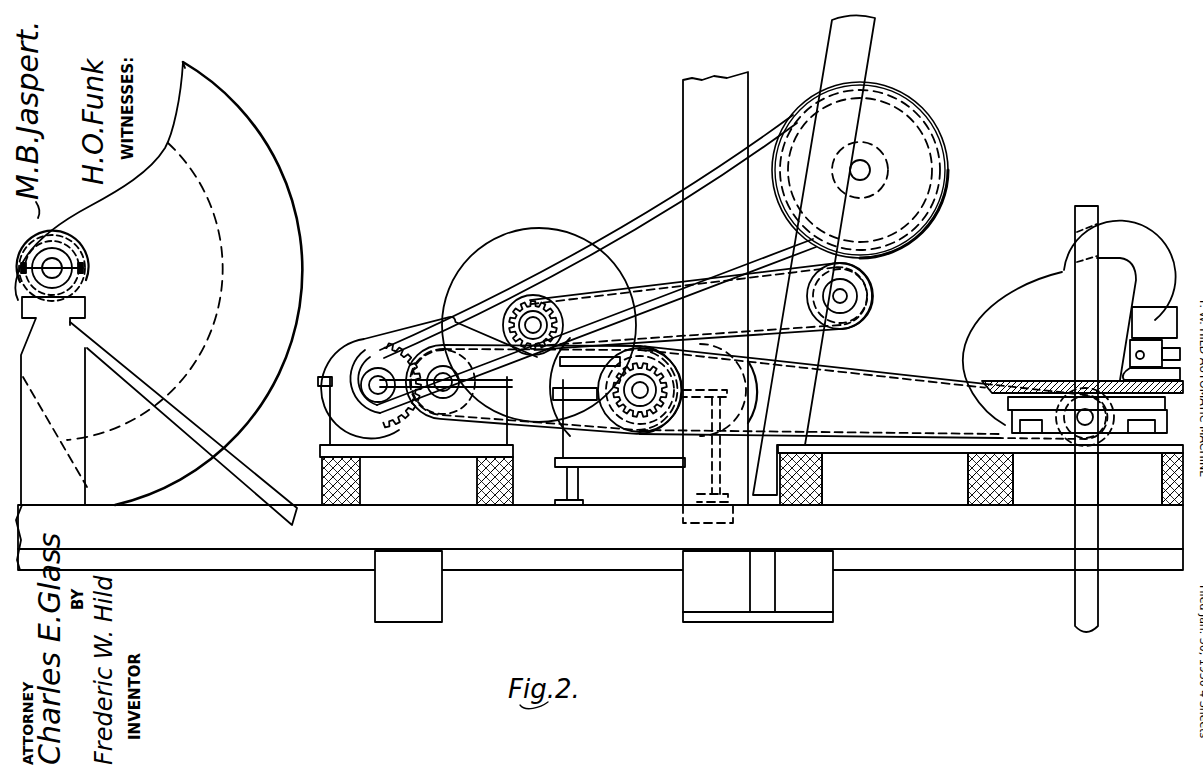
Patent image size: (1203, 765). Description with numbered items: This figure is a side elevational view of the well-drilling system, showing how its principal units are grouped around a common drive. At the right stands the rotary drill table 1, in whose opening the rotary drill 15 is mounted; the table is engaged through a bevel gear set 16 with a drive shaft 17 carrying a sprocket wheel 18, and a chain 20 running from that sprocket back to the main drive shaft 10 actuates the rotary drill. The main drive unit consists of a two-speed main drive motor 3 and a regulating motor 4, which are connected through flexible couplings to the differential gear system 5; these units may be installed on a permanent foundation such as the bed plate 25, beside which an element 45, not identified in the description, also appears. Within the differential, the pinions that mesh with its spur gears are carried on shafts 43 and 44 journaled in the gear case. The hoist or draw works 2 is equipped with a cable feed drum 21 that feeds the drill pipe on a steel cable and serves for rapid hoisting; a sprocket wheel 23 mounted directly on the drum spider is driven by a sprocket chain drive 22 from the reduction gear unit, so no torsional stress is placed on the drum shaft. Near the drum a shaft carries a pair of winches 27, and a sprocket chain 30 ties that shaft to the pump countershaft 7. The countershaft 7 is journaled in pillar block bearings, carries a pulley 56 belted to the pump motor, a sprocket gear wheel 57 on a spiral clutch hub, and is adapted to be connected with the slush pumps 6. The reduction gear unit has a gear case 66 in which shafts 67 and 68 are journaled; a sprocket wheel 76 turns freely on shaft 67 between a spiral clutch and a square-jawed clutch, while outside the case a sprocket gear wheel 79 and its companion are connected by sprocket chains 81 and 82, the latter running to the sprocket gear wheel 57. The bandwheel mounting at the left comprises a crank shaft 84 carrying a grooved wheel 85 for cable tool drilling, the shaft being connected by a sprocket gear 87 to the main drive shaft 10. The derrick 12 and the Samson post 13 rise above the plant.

The rotary drill table 1 is at (1057, 382).
The hoist or draw works 2 is at (946, 182).
The main drive motor 3 is at (762, 398).
The regulating motor 4 is at (562, 428).
The differential gear system 5 is at (642, 450).
The slush pumps 6 is at (1140, 240).
The pump countershaft 7 is at (548, 323).
The main drive shaft 10 is at (622, 410).
The derrick 12 is at (858, 58).
The Samson post 13 is at (690, 133).
The rotary drill 15 is at (1076, 226).
The bevel gear set 16 is at (1003, 386).
The drive shaft 17 is at (1092, 442).
The sprocket wheel 18 is at (1078, 442).
The chain 20 is at (914, 375).
The cable feed drum 21 is at (868, 158).
The sprocket chain drive 22 is at (655, 205).
The sprocket wheel 23 is at (938, 148).
The bed plate 25 is at (568, 506).
The winches 27 is at (855, 298).
The sprocket chain 30 is at (654, 297).
The shaft 43 is at (551, 398).
The shaft 44 is at (708, 456).
The rail 45 is at (648, 462).
The pulley 56 is at (546, 227).
The sprocket gear wheel 57 is at (521, 312).
The gear case 66 is at (373, 336).
The shaft 67 is at (458, 400).
The shaft 68 is at (380, 394).
The sprocket wheel 76 is at (488, 406).
The sprocket gear wheel 79 is at (366, 402).
The sprocket chain 81 is at (440, 396).
The sprocket chain 82 is at (428, 340).
The crank shaft 84 is at (58, 266).
The grooved wheel 85 is at (262, 172).
The sprocket gear 87 is at (84, 271).